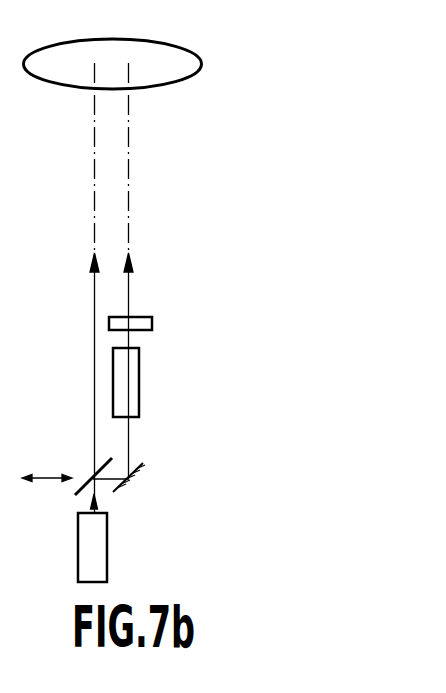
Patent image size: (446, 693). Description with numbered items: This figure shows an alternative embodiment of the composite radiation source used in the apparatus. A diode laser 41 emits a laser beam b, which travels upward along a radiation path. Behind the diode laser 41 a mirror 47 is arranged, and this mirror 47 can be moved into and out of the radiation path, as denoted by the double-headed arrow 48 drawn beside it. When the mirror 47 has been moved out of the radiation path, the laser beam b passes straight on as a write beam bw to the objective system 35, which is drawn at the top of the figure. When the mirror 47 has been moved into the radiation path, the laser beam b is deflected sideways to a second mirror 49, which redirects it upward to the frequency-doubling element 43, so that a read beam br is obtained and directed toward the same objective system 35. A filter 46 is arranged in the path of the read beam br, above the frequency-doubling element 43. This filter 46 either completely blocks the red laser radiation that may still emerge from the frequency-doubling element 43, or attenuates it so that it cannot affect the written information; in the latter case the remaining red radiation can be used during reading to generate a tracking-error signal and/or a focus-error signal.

The objective system 35 is at (201, 64).
The write beam bw is at (92, 282).
The read beam br is at (130, 282).
The filter 46 is at (148, 323).
The frequency-doubling element 43 is at (132, 381).
The mirror 47 is at (83, 480).
The second mirror 49 is at (143, 479).
The arrow 48 is at (46, 480).
The laser beam b is at (96, 507).
The diode laser 41 is at (92, 548).